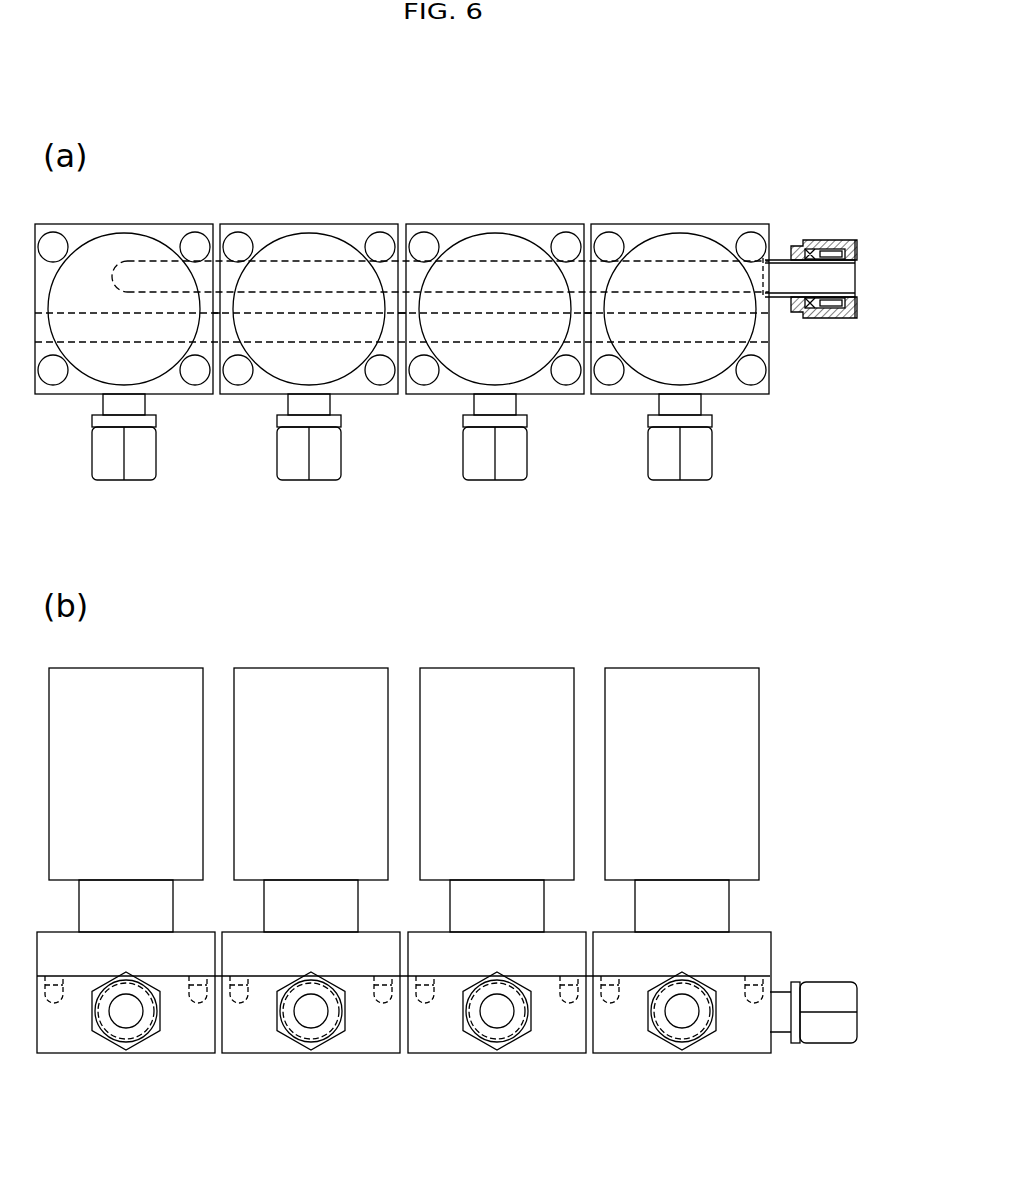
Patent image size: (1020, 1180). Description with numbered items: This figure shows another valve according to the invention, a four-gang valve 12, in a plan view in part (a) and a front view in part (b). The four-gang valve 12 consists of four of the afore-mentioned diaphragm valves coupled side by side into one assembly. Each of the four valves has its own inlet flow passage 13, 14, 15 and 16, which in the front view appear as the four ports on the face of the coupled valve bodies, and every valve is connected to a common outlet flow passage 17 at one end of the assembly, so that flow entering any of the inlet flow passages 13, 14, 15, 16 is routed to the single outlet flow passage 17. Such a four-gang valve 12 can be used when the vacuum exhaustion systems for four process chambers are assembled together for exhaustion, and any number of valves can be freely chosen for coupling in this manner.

The 4-gang valve 12 is at (778, 428).
The inlet flow passage 13 is at (682, 1013).
The inlet flow passage 14 is at (497, 1013).
The inlet flow passage 15 is at (311, 1013).
The inlet flow passage 16 is at (126, 1013).
The outlet flow passage 17 is at (842, 280).